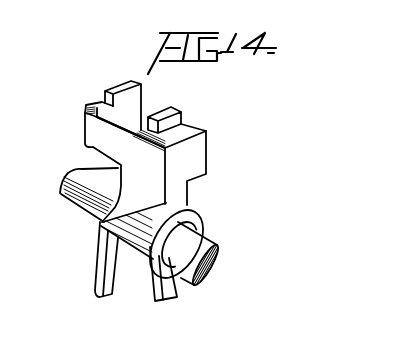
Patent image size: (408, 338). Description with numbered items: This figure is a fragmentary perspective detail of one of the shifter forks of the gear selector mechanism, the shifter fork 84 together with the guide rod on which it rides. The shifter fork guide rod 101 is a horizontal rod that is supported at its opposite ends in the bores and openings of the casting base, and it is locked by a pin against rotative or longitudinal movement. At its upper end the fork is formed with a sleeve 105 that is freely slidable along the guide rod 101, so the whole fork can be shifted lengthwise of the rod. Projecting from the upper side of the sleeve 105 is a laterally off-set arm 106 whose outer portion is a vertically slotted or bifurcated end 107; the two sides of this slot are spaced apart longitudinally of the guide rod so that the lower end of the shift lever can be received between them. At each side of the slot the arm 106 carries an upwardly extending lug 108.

The shifter fork 84 is at (63, 296).
The shifter fork guide rod 101 is at (66, 206).
The sleeve 105 is at (118, 217).
The laterally off-set arm 106 is at (86, 135).
The bifurcated end 107 is at (152, 102).
The lug 108 is at (123, 82).